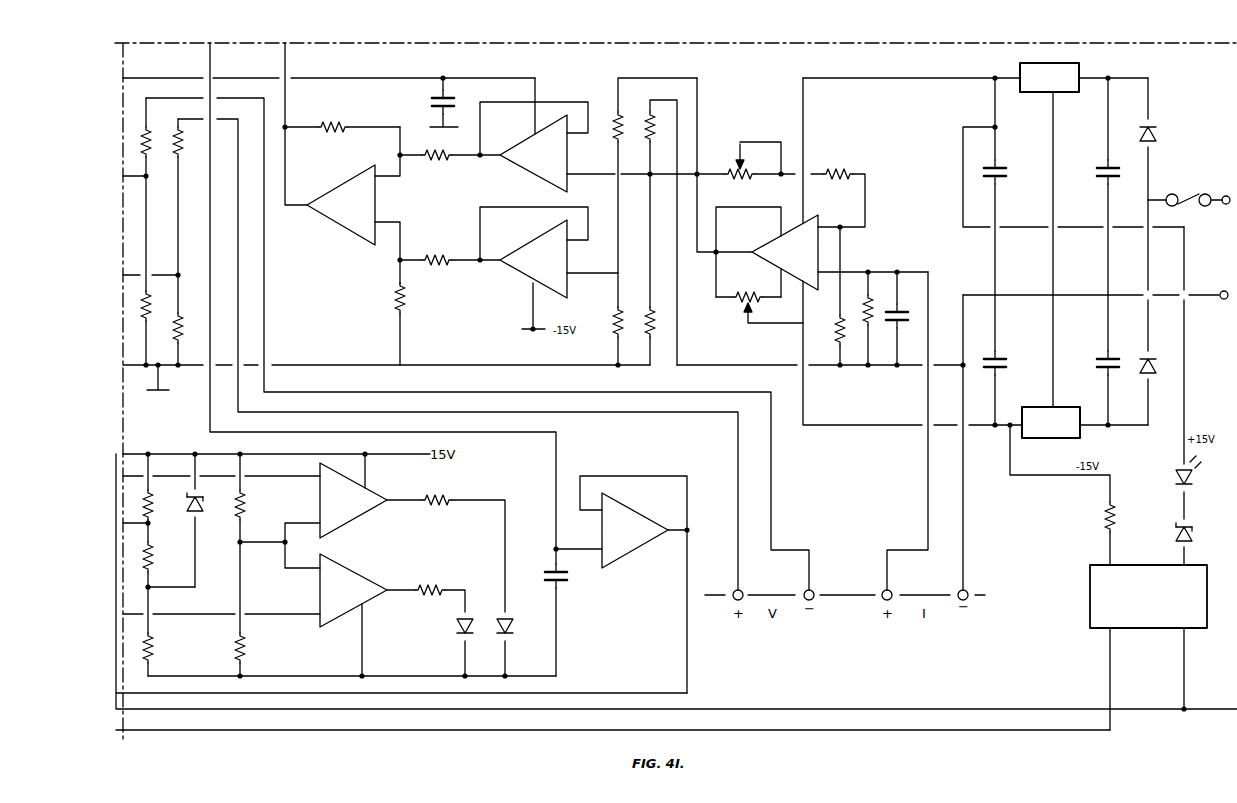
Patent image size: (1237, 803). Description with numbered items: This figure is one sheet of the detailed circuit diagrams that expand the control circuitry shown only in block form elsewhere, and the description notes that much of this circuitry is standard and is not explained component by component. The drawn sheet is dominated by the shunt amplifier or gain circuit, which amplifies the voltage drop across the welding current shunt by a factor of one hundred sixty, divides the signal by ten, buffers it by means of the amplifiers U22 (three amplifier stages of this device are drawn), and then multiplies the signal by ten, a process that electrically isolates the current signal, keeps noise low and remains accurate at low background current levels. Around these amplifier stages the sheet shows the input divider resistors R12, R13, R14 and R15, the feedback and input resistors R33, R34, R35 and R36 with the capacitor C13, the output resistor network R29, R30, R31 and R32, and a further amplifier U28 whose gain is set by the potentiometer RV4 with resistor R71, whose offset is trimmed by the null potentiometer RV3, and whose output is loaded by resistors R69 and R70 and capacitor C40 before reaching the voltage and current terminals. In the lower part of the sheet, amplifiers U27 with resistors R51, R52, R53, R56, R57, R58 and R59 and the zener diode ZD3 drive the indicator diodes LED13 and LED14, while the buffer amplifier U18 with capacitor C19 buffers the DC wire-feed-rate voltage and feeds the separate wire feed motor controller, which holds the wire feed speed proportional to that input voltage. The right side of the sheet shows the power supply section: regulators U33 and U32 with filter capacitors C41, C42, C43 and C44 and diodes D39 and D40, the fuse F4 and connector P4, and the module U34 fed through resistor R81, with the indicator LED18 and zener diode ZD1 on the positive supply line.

The resistor R12 is at (187, 198).
The resistor R13 is at (187, 321).
The resistor R14 is at (154, 138).
The resistor R15 is at (154, 272).
The resistor R29 is at (655, 192).
The resistor R30 is at (627, 335).
The resistor R31 is at (661, 232).
The resistor R32 is at (658, 332).
The resistor R33 is at (450, 270).
The resistor R34 is at (450, 165).
The resistor R35 is at (415, 324).
The resistor R36 is at (341, 119).
The resistor R51 is at (163, 631).
The resistor R52 is at (157, 556).
The resistor R53 is at (157, 488).
The resistor R56 is at (255, 497).
The resistor R57 is at (256, 610).
The resistor R58 is at (440, 591).
The resistor R59 is at (463, 546).
The resistor R69 is at (859, 318).
The resistor R70 is at (831, 297).
The resistor R71 is at (838, 191).
The resistor R81 is at (1072, 495).
The null adjust potentiometer RV3 is at (755, 303).
The gain adjust potentiometer RV4 is at (746, 161).
The capacitor C13 is at (434, 101).
The capacitor C19 is at (573, 611).
The capacitor C40 is at (903, 318).
The capacitor C41 is at (1073, 186).
The capacitor C42 is at (1004, 361).
The capacitor C43 is at (1098, 186).
The capacitor C44 is at (1098, 361).
The diode D39 is at (1163, 139).
The diode D40 is at (1157, 312).
The zener diode ZD1 is at (1200, 544).
The zener diode ZD3 is at (207, 519).
The light emitting diode LED13 is at (520, 645).
The light emitting diode LED14 is at (448, 648).
The light emitting diode LED18 is at (1199, 373).
The buffer amplifier U18d U18 is at (635, 584).
The buffer amplifiers U22a and U22b U22 is at (497, 205).
The operational amplifier U27 (c,d) U27 is at (363, 564).
The operational amplifier U28 is at (820, 256).
The voltage regulator U32 is at (1045, 369).
The voltage regulator U33 is at (975, 179).
The power module U34 is at (1148, 641).
The fuse F4 is at (1189, 199).
The connector P4 is at (1098, 238).